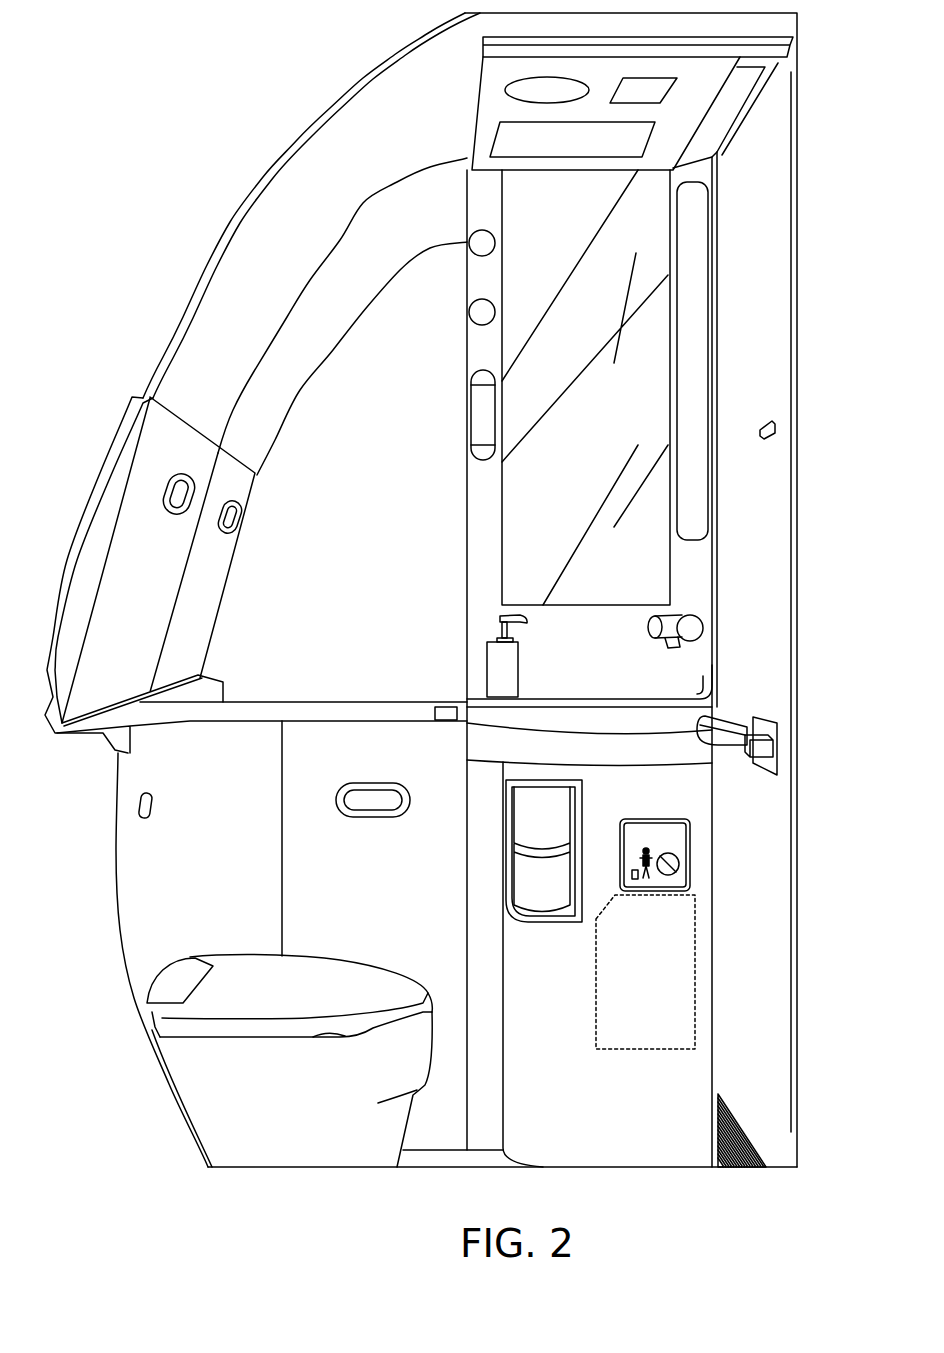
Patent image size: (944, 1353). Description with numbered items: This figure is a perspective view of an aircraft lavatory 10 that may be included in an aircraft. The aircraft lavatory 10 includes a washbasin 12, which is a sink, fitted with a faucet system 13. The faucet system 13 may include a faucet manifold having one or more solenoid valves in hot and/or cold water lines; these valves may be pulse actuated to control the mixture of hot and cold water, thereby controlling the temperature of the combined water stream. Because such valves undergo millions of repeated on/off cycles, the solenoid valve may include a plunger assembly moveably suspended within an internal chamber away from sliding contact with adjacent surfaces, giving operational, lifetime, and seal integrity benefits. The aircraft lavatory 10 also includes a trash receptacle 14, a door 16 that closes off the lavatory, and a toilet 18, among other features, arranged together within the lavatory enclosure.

The aircraft lavatory 10 is at (128, 142).
The washbasin 12 is at (571, 637).
The faucet system 13 is at (677, 615).
The trash receptacle 14 is at (647, 843).
The door 16 is at (760, 660).
The toilet 18 is at (302, 1146).